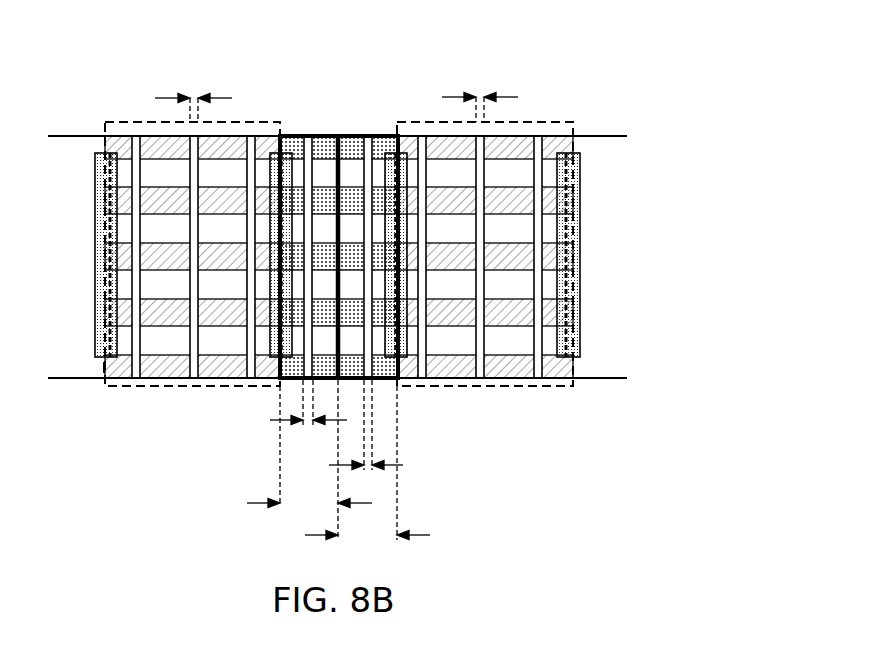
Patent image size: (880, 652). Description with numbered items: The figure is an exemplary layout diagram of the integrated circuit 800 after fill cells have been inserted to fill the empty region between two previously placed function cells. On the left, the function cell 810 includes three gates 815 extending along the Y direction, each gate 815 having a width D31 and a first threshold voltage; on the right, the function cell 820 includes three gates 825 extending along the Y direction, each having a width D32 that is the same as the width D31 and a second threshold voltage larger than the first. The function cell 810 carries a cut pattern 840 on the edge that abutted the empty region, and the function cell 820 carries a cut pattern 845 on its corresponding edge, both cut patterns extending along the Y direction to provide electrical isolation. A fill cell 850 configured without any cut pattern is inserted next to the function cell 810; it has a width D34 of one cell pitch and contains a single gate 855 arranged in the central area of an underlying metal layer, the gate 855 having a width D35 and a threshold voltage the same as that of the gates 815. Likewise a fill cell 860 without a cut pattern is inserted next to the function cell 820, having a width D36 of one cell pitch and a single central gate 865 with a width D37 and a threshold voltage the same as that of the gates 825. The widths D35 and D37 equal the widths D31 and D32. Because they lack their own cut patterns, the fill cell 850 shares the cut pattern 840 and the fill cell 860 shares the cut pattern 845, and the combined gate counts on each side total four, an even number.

The integrated circuit 800 is at (676, 40).
The function cell 810 is at (105, 122).
The function cell 820 is at (557, 122).
The gates 815 is at (195, 378).
The gates 825 is at (482, 378).
The cut pattern 840 is at (271, 358).
The cut pattern 845 is at (401, 358).
The fill cell 850 is at (283, 135).
The fill cell 860 is at (393, 135).
The gate 855 is at (310, 150).
The gate 865 is at (365, 150).
The width D31 is at (193, 96).
The width D32 is at (480, 95).
The width D34 is at (309, 460).
The width D35 is at (308, 420).
The width D36 is at (367, 468).
The width D37 is at (366, 438).